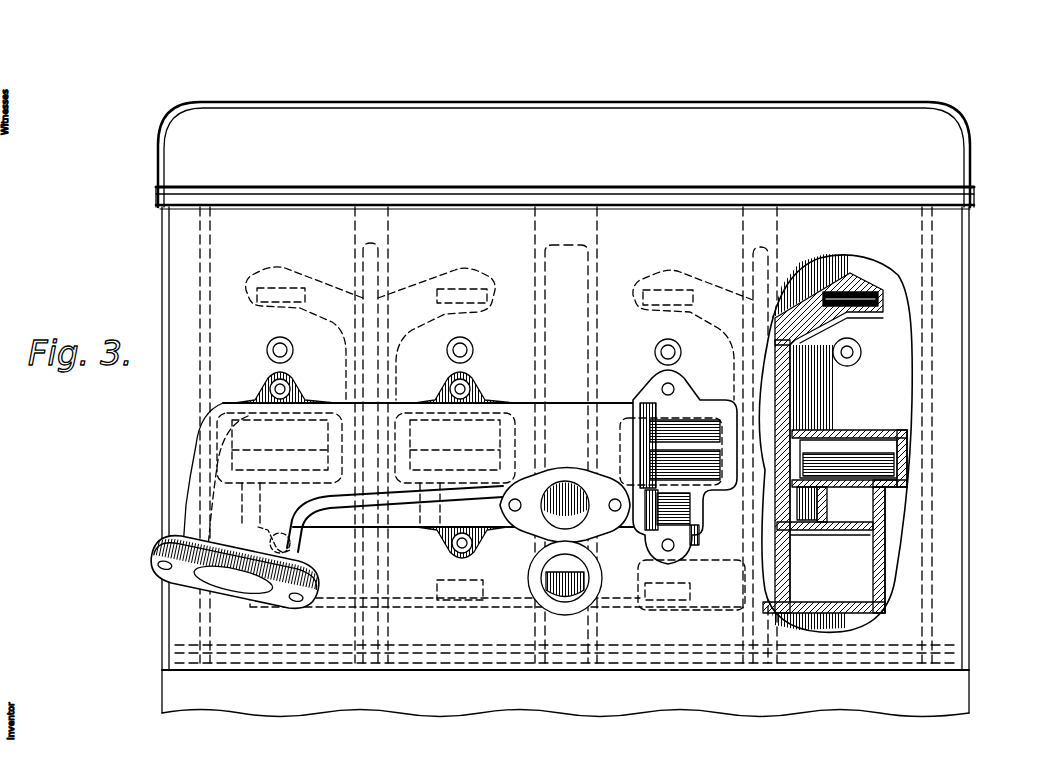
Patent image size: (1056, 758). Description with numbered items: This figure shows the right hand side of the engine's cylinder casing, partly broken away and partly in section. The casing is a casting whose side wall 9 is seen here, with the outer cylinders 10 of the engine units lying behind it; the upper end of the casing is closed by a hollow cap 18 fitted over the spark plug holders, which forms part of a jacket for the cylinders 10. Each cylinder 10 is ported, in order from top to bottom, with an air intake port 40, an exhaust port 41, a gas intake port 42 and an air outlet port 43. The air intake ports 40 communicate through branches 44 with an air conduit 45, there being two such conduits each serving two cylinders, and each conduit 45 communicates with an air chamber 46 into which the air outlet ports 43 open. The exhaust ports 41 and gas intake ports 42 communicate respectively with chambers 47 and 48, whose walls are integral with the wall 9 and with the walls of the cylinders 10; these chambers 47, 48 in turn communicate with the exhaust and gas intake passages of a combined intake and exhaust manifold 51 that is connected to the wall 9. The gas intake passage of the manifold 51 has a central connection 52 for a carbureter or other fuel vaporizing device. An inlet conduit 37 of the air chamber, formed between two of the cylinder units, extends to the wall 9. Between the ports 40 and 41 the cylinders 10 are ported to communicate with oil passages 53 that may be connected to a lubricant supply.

The hollow cap 18 is at (592, 118).
The outer cylinder 10 is at (565, 462).
The side wall 9 is at (566, 435).
The combined intake and exhaust manifold 51 is at (555, 418).
The oil passage 53 is at (293, 352).
The central connection 52 is at (602, 513).
The inlet conduit 37 is at (583, 587).
The gas intake port 42 is at (682, 513).
The air outlet port 43 is at (693, 590).
The air intake port 40 is at (873, 290).
The branch 44 is at (878, 306).
The air conduit 45 is at (781, 392).
The exhaust port 41 is at (913, 437).
The chamber 47 is at (883, 452).
The chamber 48 is at (878, 502).
The air chamber 46 is at (857, 545).